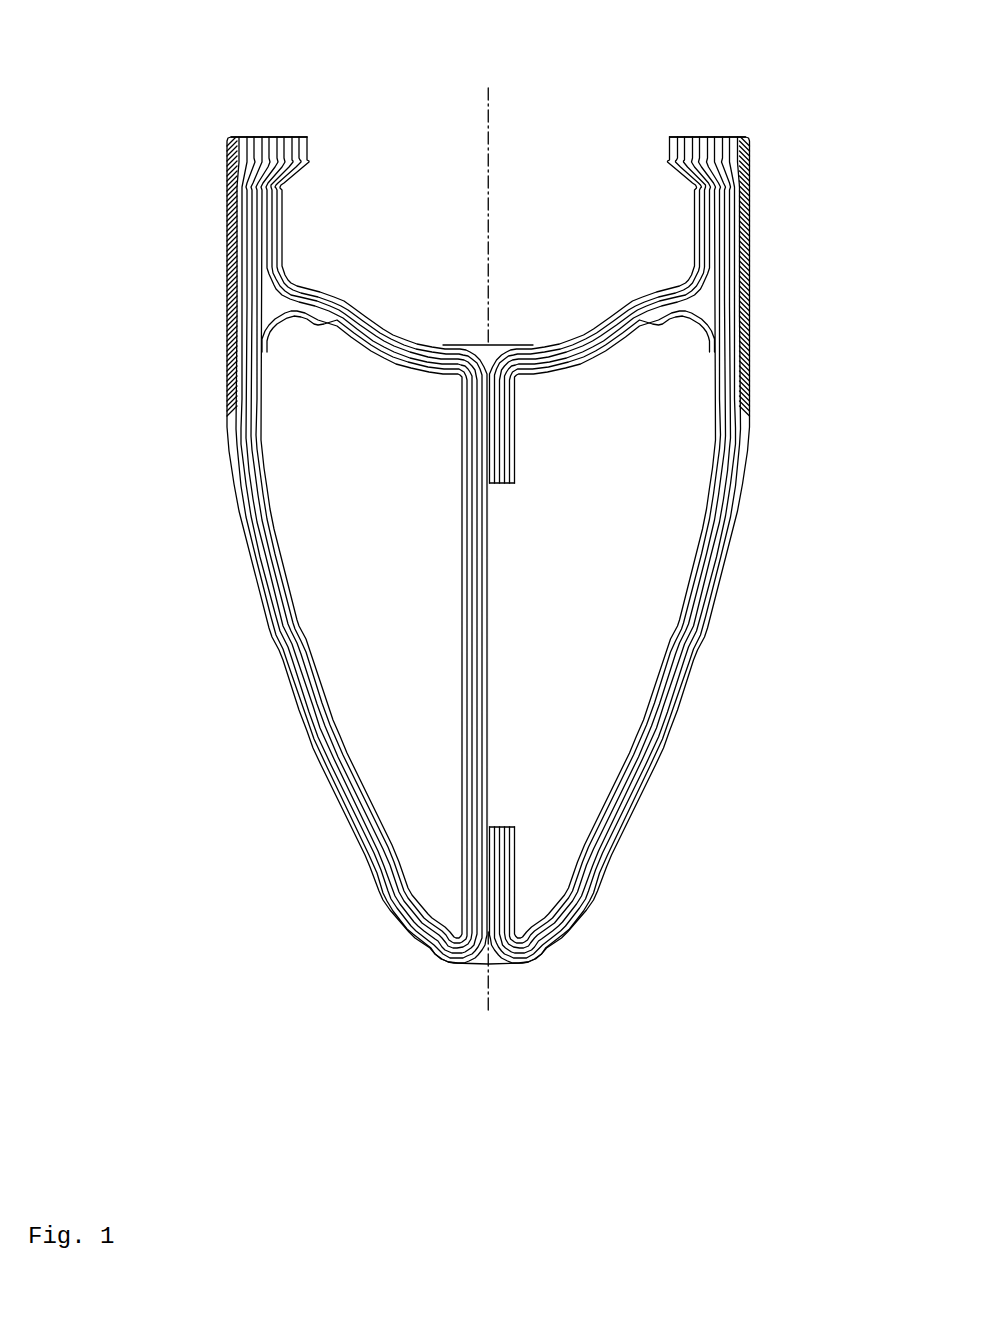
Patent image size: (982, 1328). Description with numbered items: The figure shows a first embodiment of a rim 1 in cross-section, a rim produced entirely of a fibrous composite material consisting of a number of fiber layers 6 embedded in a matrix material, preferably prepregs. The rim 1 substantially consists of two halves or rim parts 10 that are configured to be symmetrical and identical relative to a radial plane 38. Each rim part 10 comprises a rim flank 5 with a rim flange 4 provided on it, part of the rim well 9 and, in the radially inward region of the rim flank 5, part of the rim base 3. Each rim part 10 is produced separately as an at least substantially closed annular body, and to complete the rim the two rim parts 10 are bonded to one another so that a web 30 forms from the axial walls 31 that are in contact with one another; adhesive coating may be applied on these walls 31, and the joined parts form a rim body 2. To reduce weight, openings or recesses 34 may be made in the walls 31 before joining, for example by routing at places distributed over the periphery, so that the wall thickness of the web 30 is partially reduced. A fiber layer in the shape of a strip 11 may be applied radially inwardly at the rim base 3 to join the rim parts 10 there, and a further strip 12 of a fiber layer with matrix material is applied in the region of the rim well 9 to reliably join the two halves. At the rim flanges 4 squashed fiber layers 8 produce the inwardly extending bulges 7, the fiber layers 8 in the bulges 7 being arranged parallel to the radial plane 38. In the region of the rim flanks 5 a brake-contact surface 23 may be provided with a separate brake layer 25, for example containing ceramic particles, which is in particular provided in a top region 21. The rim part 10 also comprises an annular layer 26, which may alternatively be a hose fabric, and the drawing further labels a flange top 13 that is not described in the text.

The rim 1 is at (193, 89).
The rim body 2 is at (272, 632).
The rim base 3 is at (503, 975).
The rim flange 4 is at (224, 140).
The rim flank 5 is at (184, 412).
The fiber layers 6 is at (685, 210).
The bulges 7 is at (303, 140).
The squashed fiber layers 8 is at (675, 137).
The rim well 9 is at (503, 343).
The rim parts 10 is at (705, 634).
The strip 11 is at (473, 963).
The strip 12 is at (480, 342).
The flange top 13 is at (290, 134).
The top region 21 is at (183, 160).
The brake-contact surface 23 is at (228, 208).
The brake layer 25 is at (228, 266).
The annular layer 26 is at (285, 322).
The web 30 is at (513, 462).
The walls 31 is at (487, 497).
The recesses 34 is at (515, 570).
The radial plane 38 is at (494, 122).